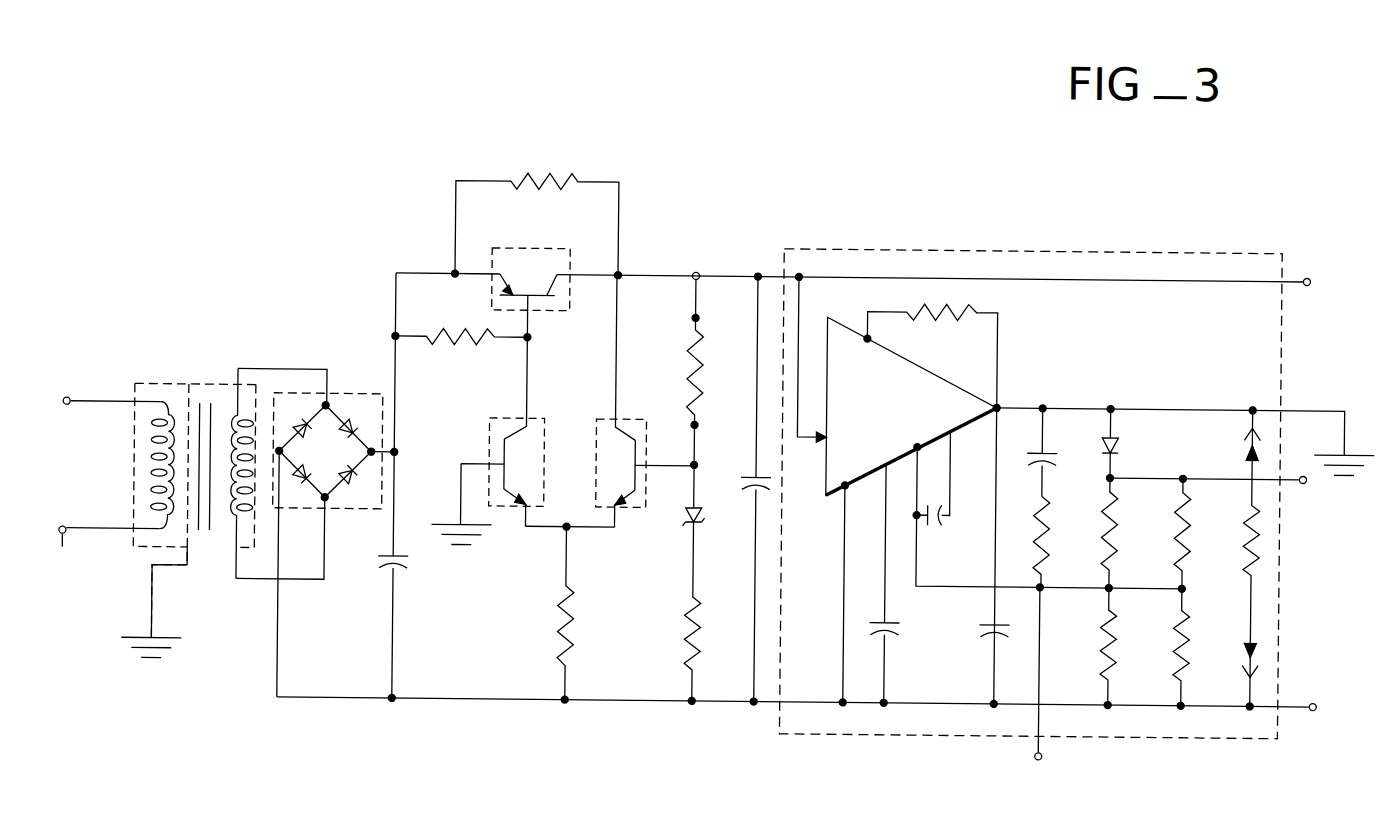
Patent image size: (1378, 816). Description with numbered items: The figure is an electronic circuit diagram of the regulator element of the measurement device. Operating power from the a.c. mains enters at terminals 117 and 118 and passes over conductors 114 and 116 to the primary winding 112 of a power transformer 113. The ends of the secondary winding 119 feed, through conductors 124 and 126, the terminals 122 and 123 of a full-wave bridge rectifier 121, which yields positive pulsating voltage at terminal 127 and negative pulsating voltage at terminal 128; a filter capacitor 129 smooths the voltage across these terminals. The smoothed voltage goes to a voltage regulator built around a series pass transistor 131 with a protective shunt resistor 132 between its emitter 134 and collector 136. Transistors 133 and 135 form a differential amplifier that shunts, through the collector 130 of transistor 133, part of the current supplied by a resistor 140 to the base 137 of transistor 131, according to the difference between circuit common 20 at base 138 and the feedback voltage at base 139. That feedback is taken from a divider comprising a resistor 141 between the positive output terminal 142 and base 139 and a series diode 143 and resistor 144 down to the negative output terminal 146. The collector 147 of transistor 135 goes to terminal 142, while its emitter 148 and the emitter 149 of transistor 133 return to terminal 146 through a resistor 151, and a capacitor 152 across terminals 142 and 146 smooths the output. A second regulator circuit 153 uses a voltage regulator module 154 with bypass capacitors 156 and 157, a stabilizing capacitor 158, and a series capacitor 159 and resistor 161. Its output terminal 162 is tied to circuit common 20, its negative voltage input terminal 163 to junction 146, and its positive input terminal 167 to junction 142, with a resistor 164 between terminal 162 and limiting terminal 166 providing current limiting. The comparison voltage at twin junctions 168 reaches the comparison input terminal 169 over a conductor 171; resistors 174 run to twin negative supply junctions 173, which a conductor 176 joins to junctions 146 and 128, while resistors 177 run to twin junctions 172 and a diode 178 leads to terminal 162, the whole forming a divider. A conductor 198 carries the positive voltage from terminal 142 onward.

The circuit common 20 is at (1349, 483).
The primary winding 112 is at (145, 457).
The power transformer 113 is at (165, 385).
The conductor 114 is at (108, 405).
The conductor 116 is at (104, 529).
The terminal 117 is at (68, 399).
The terminal 118 is at (61, 550).
The secondary winding 119 is at (236, 530).
The full-wave bridge rectifier 121 is at (341, 393).
The terminal 122 is at (323, 403).
The terminal 123 is at (328, 499).
The conductor 124 is at (258, 369).
The conductor 126 is at (254, 582).
The terminal 127 is at (381, 447).
The terminal 128 is at (283, 454).
The filter capacitor 129 is at (409, 569).
The collector 130 is at (532, 434).
The series pass transistor 131 is at (572, 287).
The protective shunt resistor 132 is at (526, 178).
The transistor 133 is at (502, 411).
The emitter 134 is at (512, 278).
The transistor 135 is at (640, 420).
The collector 136 is at (552, 280).
The base 137 is at (532, 308).
The base 138 is at (480, 458).
The base 139 is at (668, 460).
The resistor 140 is at (476, 338).
The resistor 141 is at (691, 365).
The positive output terminal 142 is at (697, 269).
The diode 143 is at (689, 509).
The resistor 144 is at (680, 634).
The negative output terminal 146 is at (687, 706).
The collector 147 is at (600, 448).
The emitter 148 is at (613, 482).
The emitter 149 is at (521, 494).
The resistor 151 is at (558, 637).
The capacitor 152 is at (741, 485).
The second regulator circuit 153 is at (845, 244).
The voltage regulator module 154 is at (923, 367).
The bypass capacitor 156 is at (906, 622).
The bypass capacitor 157 is at (977, 628).
The capacitor 158 is at (935, 523).
The capacitor 159 is at (1066, 450).
The resistor 161 is at (1053, 516).
The output terminal 162 is at (1002, 399).
The negative voltage input terminal 163 is at (842, 490).
The resistor 164 is at (962, 308).
The limiting terminal 166 is at (872, 335).
The positive input terminal 167 is at (806, 376).
The twin junctions 168 is at (1181, 580).
The comparison input terminal 169 is at (926, 445).
The conductor 171 is at (1083, 584).
The twin junctions 172 is at (1184, 470).
The twin negative supply voltage junctions 173 is at (1182, 694).
The resistors 174 is at (1181, 631).
The conductor 176 is at (944, 698).
The resistors 177 is at (1179, 523).
The diode 178 is at (1125, 433).
The conductor 198 is at (1182, 276).